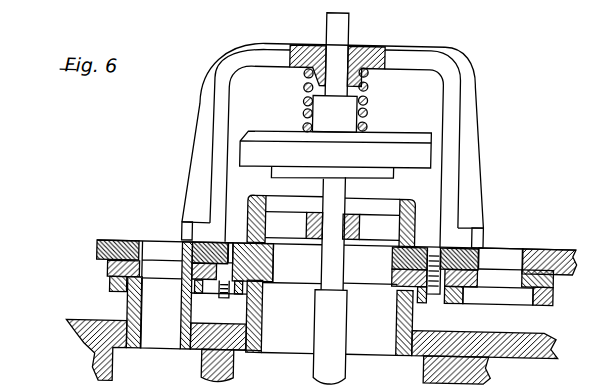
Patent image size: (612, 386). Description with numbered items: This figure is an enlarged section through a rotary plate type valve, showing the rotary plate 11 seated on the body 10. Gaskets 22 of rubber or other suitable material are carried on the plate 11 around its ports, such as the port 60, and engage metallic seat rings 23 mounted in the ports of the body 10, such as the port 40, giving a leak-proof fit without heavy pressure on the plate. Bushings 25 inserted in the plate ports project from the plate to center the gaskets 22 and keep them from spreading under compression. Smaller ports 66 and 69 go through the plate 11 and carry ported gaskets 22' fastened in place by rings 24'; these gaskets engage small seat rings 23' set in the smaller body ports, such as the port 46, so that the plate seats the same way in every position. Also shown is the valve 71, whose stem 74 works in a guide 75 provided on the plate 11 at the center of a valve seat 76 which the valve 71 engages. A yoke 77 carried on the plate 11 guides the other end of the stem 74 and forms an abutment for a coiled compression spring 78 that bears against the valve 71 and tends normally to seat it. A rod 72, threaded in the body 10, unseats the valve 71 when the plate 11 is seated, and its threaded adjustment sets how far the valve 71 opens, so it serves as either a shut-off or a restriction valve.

The body 10 is at (74, 328).
The plate 11 is at (97, 248).
The gaskets 22 is at (335, 270).
The ported gaskets 22' is at (84, 272).
The seat rings 23 is at (404, 320).
The small seat rings 23' is at (219, 301).
The rings 24' is at (94, 289).
The bushings 25 is at (274, 274).
The port 40 is at (291, 317).
The port 46 is at (160, 313).
The port 60 is at (289, 264).
The port 66 is at (159, 247).
The port 69 is at (510, 251).
The valve 71 is at (432, 154).
The rod 72 is at (342, 370).
The stem 74 is at (346, 197).
The guide 75 is at (356, 224).
The valve seat 76 is at (418, 226).
The yoke 77 is at (476, 103).
The coiled compression spring 78 is at (366, 101).